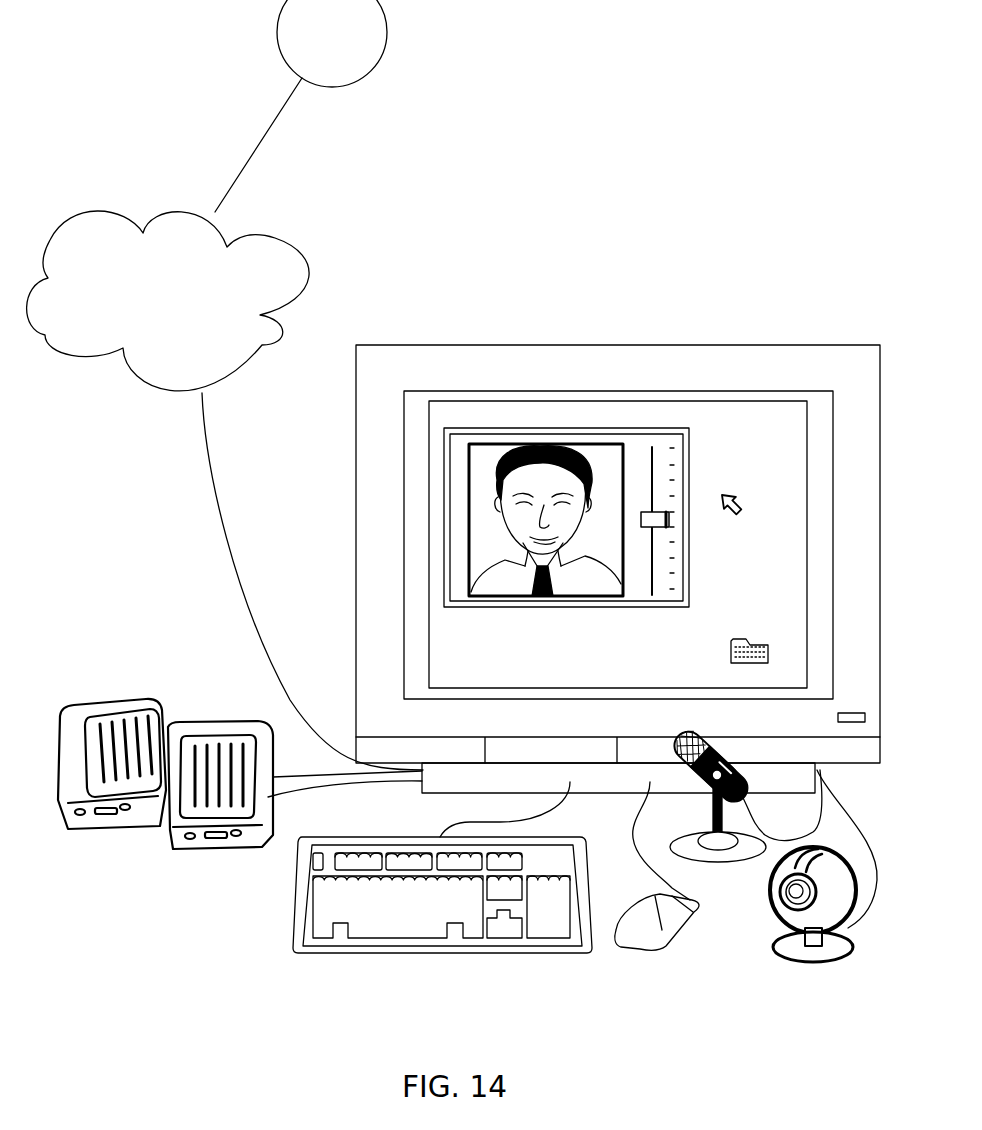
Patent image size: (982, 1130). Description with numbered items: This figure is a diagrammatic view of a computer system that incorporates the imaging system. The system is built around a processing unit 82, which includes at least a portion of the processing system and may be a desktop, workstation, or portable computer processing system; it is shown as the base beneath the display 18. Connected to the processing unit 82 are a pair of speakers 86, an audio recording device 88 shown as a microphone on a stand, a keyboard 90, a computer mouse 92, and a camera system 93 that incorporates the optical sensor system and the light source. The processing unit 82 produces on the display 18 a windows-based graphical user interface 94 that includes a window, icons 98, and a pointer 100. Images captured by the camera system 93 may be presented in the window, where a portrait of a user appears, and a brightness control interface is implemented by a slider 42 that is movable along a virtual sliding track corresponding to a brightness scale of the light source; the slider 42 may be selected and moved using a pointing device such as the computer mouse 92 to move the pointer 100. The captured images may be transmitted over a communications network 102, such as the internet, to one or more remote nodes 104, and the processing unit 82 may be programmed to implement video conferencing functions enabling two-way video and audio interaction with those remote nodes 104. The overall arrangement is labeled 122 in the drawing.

The display 18 is at (635, 345).
The slider 42 is at (676, 576).
The processing unit 82 is at (428, 793).
The pair of speakers 86 is at (172, 707).
The audio recording device 88 is at (712, 812).
The keyboard 90 is at (548, 953).
The computer mouse 92 is at (645, 943).
The camera system 93 is at (827, 957).
The graphical user interface 94 is at (768, 451).
The icons 98 is at (730, 650).
The pointer 100 is at (757, 501).
The communications network 102 is at (320, 278).
The remote nodes 104 is at (387, 30).
The computer system 122 is at (133, 503).